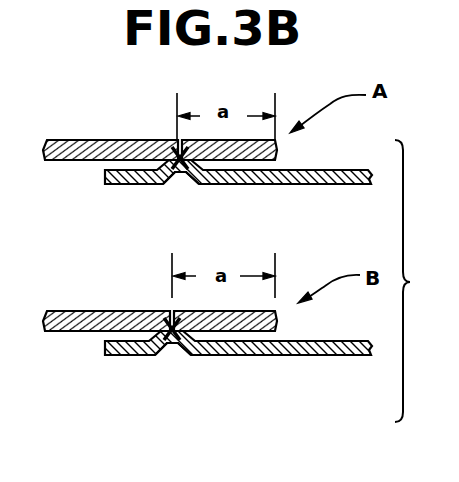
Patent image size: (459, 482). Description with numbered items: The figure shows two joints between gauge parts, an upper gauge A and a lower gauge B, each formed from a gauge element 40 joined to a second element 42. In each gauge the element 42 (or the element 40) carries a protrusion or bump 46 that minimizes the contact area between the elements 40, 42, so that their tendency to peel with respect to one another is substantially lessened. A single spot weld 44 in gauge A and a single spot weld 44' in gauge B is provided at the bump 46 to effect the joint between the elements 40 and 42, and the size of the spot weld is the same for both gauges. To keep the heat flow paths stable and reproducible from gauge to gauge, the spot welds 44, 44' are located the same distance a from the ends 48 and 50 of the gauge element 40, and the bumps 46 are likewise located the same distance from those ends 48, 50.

The gauge element 40 is at (83, 140).
The gauge element 42 is at (332, 185).
The spot weld 44 is at (157, 135).
The spot weld 44' is at (150, 307).
The bump 46 is at (182, 182).
The end of gauge element 48 is at (276, 150).
The end of gauge element 50 is at (276, 322).